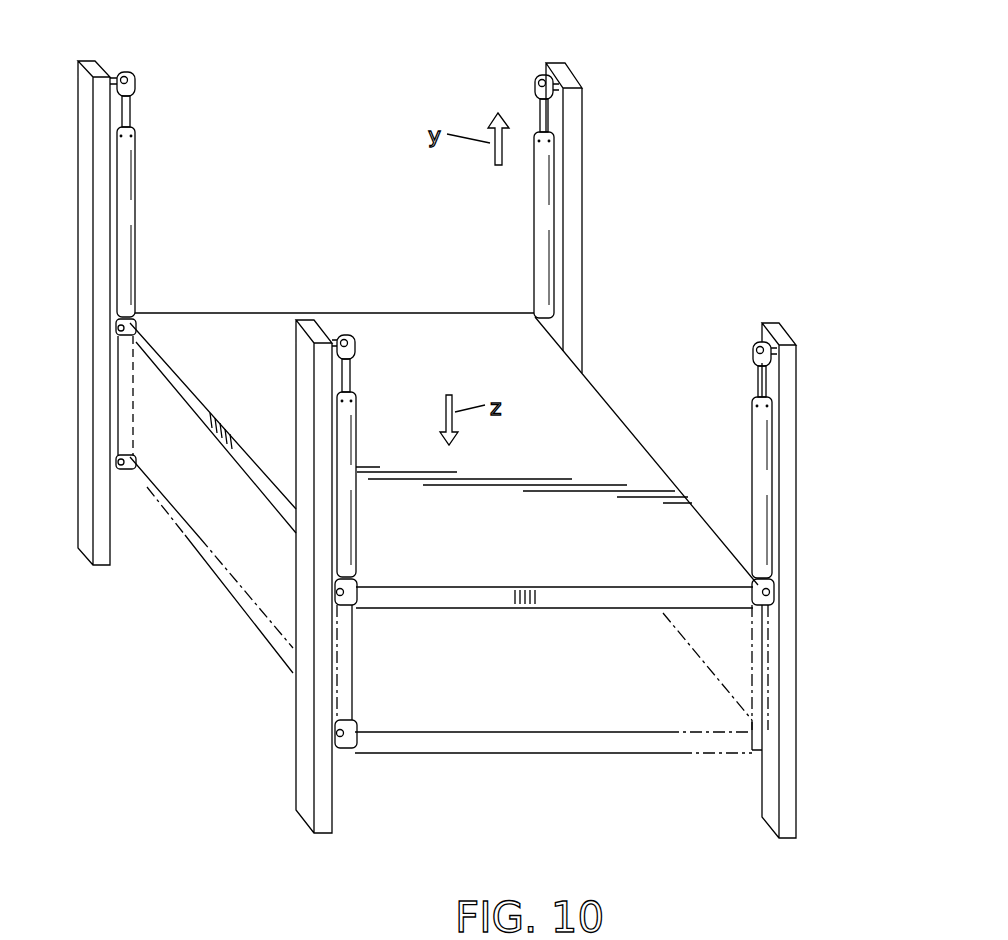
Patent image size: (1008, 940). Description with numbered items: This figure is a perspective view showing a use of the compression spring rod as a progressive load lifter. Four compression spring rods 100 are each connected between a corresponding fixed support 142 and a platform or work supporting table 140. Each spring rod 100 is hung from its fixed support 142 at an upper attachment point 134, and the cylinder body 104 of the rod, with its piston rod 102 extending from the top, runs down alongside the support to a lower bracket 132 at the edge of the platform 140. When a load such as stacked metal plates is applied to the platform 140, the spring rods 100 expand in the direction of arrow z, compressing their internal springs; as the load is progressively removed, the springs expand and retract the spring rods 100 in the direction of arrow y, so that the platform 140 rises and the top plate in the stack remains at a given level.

The compression spring rod 100 is at (496, 292).
The piston rod 102 is at (137, 110).
The cylinder body 104 is at (143, 238).
The bracket 132 is at (140, 331).
The hook 134 is at (140, 76).
The platform or work supporting table 140 is at (578, 398).
The fixed support 142 is at (97, 578).